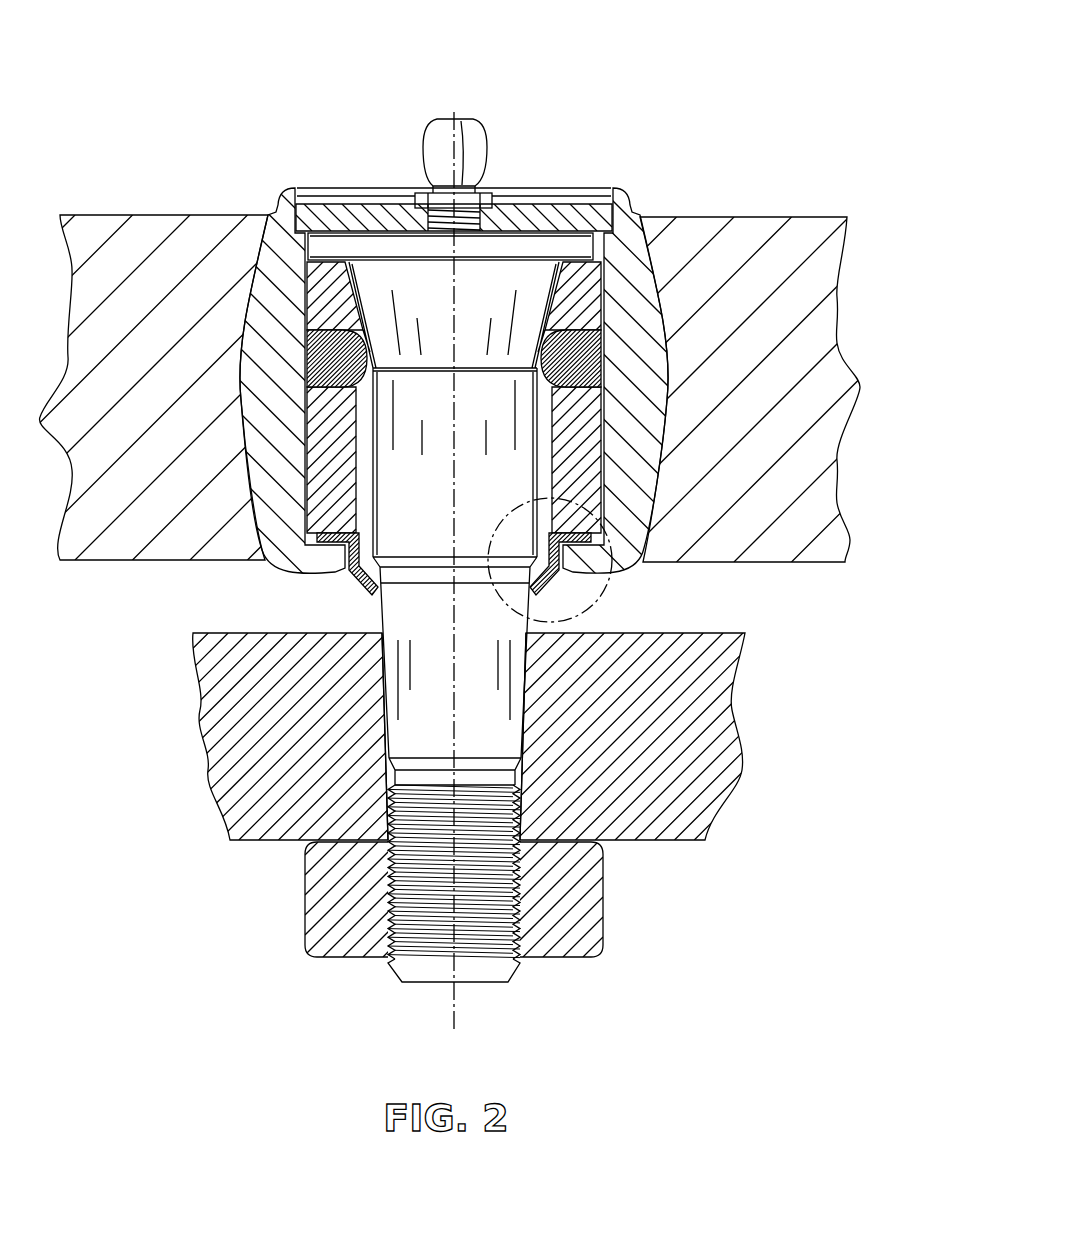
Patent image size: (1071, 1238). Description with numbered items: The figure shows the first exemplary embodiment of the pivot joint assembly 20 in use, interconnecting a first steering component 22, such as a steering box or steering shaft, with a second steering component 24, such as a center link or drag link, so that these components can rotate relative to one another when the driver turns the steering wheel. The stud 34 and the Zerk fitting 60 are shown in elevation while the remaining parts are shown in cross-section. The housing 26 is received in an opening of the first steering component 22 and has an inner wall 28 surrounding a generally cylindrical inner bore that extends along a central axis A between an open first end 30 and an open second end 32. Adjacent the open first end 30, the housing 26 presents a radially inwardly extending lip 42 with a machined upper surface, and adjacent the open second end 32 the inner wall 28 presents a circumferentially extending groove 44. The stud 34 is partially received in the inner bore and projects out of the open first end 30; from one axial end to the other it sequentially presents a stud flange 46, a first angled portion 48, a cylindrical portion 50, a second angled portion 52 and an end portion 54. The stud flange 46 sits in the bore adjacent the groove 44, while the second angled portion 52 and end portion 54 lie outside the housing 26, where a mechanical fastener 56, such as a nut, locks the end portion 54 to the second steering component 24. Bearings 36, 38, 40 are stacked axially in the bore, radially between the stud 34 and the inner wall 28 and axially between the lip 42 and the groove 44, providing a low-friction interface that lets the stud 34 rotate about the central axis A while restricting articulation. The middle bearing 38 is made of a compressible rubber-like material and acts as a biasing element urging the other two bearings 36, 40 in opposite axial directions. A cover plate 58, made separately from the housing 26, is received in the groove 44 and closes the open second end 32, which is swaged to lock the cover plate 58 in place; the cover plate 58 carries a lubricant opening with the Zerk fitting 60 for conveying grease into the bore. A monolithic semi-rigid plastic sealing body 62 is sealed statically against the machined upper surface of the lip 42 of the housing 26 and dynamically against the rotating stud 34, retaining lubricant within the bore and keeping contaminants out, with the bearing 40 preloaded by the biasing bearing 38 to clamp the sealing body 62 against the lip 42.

The pivot joint assembly 20 is at (703, 99).
The first steering component 22 is at (808, 237).
The second steering component 24 is at (282, 737).
The housing 26 is at (683, 372).
The inner wall 28 is at (577, 445).
The open first end 30 is at (602, 585).
The open second end 32 is at (618, 197).
The stud 34 is at (535, 686).
The bearing 36 is at (323, 295).
The bearing 38 is at (325, 352).
The bearing 40 is at (328, 440).
The lip 42 is at (340, 570).
The groove 44 is at (302, 225).
The stud flange 46 is at (578, 247).
The first angled portion 48 is at (523, 292).
The cylindrical portion 50 is at (410, 500).
The second angled portion 52 is at (490, 720).
The end portion 54 is at (490, 890).
The mechanical fastener 56 is at (340, 902).
The cover plate 58 is at (502, 217).
The Zerk fitting 60 is at (440, 150).
The sealing body 62 is at (359, 593).
The central axis A is at (456, 1000).